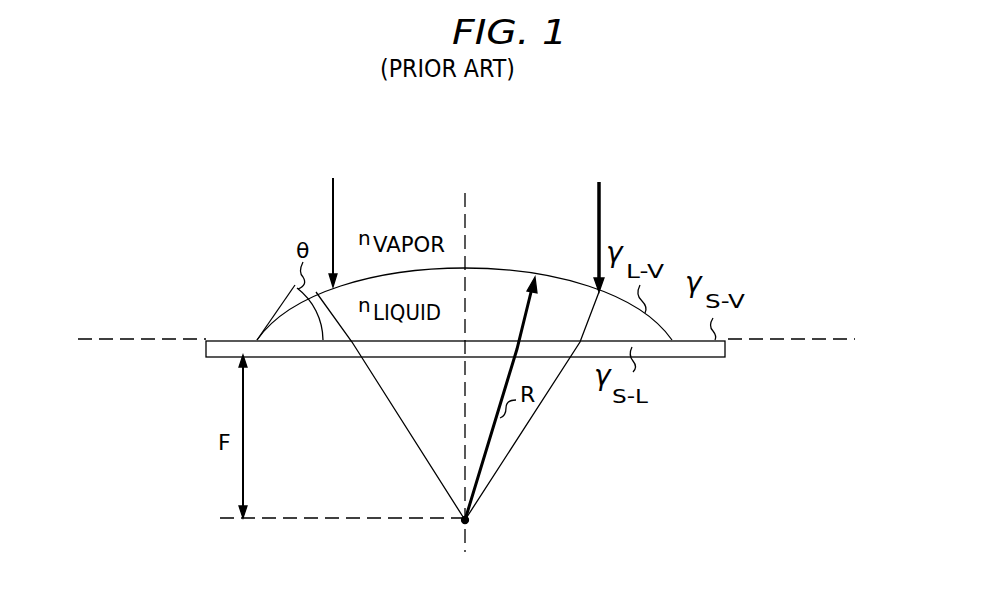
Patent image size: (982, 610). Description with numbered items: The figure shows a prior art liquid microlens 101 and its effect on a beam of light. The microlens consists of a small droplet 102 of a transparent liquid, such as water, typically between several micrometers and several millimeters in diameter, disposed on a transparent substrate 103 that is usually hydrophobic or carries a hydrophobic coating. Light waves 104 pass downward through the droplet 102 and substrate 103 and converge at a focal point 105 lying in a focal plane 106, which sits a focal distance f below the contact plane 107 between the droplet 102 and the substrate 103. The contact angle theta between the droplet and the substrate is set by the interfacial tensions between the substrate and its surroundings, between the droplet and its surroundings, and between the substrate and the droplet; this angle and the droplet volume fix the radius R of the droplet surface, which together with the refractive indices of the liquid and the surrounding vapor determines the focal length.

The liquid microlens 101 is at (139, 196).
The droplet 102 is at (525, 275).
The substrate 103 is at (711, 360).
The light waves 104 is at (335, 180).
The focal point 105 is at (469, 523).
The focal plane 106 is at (335, 521).
The contact plane 107 is at (122, 341).